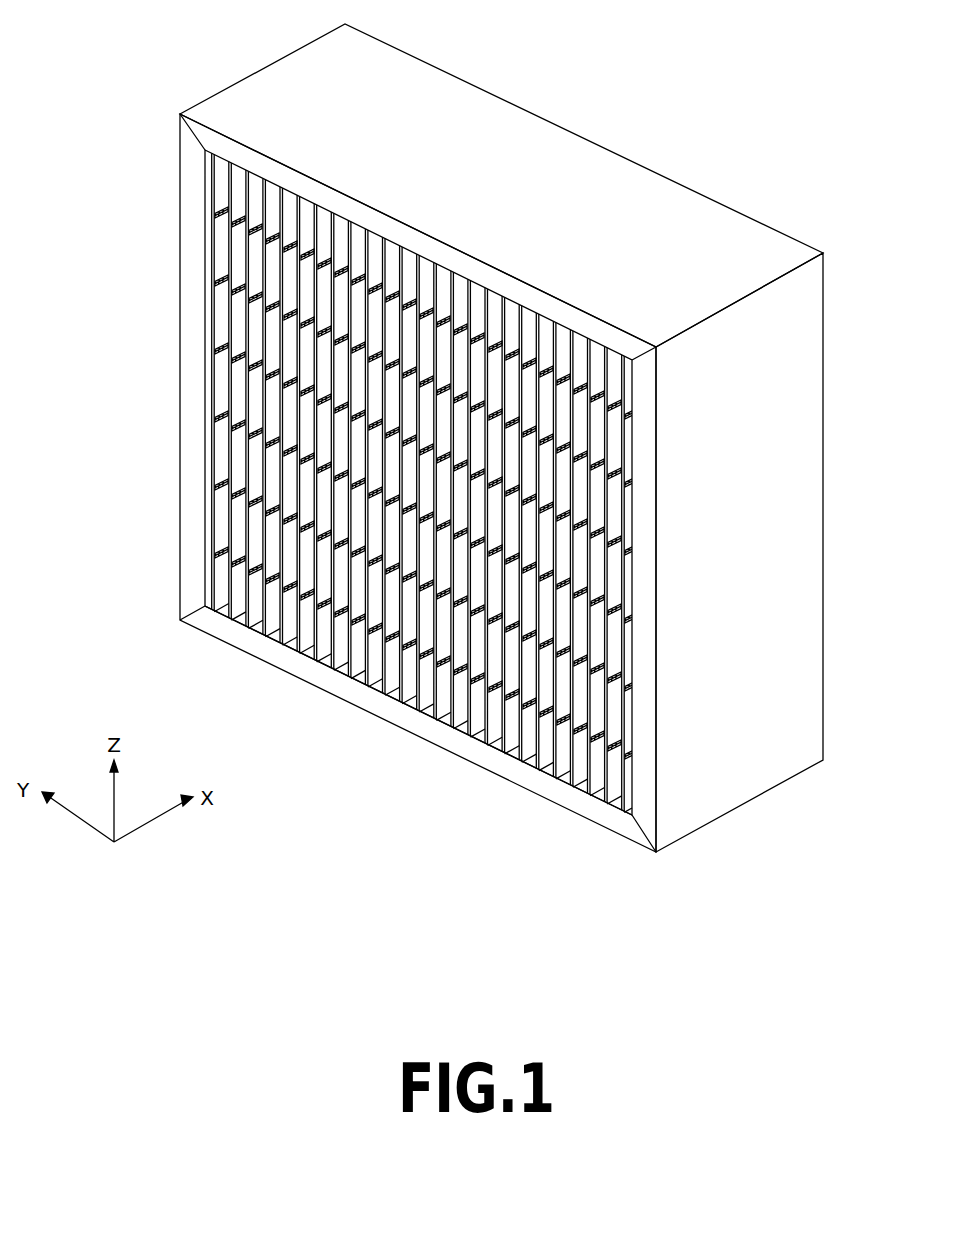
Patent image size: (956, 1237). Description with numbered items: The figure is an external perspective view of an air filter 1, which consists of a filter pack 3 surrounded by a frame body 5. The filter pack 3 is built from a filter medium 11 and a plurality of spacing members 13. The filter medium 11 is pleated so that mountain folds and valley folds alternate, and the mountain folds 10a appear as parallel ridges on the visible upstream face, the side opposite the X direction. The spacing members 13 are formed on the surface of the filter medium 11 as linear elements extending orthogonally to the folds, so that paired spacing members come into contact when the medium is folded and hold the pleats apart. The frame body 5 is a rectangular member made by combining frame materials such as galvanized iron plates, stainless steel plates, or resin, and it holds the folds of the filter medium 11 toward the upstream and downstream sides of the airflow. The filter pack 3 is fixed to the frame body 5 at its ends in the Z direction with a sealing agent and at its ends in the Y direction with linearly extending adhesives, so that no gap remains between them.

The air filter 1 is at (632, 130).
The filter pack 3 is at (548, 742).
The frame body 5 is at (758, 546).
The mountain folds 10a is at (593, 775).
The filter medium 11 is at (537, 760).
The spacing members 13 is at (513, 728).